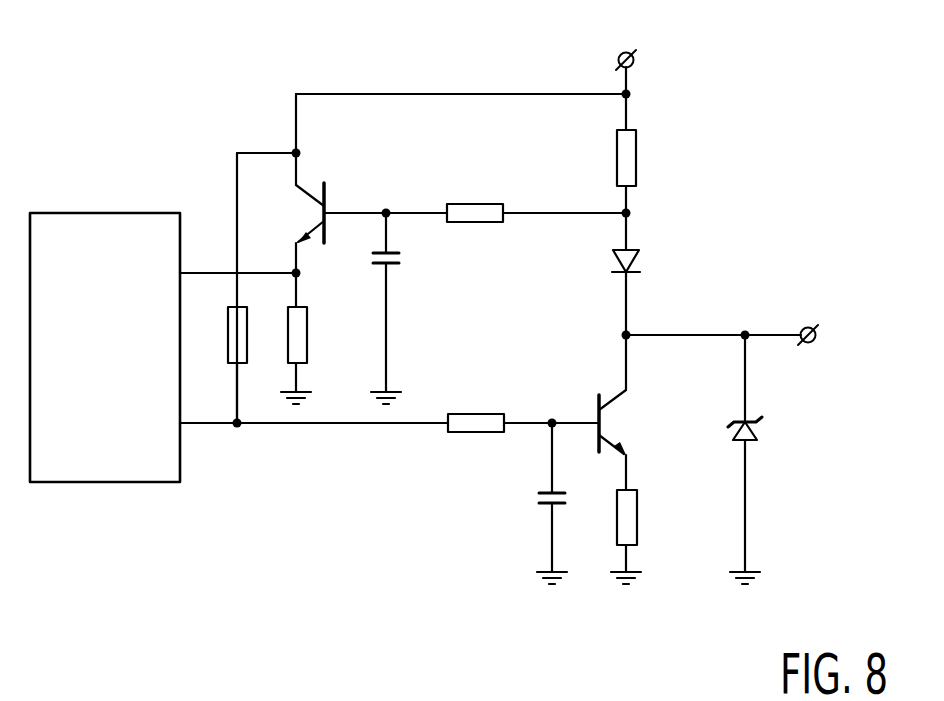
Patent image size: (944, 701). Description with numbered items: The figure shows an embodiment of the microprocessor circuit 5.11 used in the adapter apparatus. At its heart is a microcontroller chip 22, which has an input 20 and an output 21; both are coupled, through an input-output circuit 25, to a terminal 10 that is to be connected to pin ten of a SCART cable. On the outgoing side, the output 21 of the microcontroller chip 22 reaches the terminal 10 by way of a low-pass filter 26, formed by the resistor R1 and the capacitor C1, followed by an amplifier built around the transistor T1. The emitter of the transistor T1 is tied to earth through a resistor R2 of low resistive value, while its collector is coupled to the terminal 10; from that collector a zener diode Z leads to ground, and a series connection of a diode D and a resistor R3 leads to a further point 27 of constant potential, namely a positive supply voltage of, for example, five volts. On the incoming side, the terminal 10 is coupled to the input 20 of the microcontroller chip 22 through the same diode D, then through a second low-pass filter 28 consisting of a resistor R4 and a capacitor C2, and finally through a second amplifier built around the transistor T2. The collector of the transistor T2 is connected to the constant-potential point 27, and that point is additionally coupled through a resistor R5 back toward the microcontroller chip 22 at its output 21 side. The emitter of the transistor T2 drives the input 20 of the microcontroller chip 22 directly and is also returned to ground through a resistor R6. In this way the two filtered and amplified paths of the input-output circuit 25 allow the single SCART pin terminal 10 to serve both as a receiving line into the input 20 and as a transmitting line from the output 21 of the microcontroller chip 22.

The microcontroller chip 22 is at (112, 226).
The input 20 is at (181, 271).
The output 21 is at (182, 426).
The point of constant potential 27 is at (634, 57).
The terminal 10 is at (816, 333).
The microprocessor circuit 5.11 is at (738, 270).
The low-pass filter 28 is at (497, 284).
The input-output circuit 25 is at (496, 354).
The low-pass filter 26 is at (472, 519).
The resistor R1 is at (482, 427).
The resistor R2 is at (629, 514).
The resistor R3 is at (627, 158).
The resistor R4 is at (475, 214).
The resistor R5 is at (229, 341).
The resistor R6 is at (289, 336).
The capacitor C1 is at (568, 499).
The capacitor C2 is at (377, 256).
The transistor T1 is at (606, 423).
The transistor T2 is at (321, 212).
The diode D is at (630, 259).
The zener diode Z is at (752, 430).